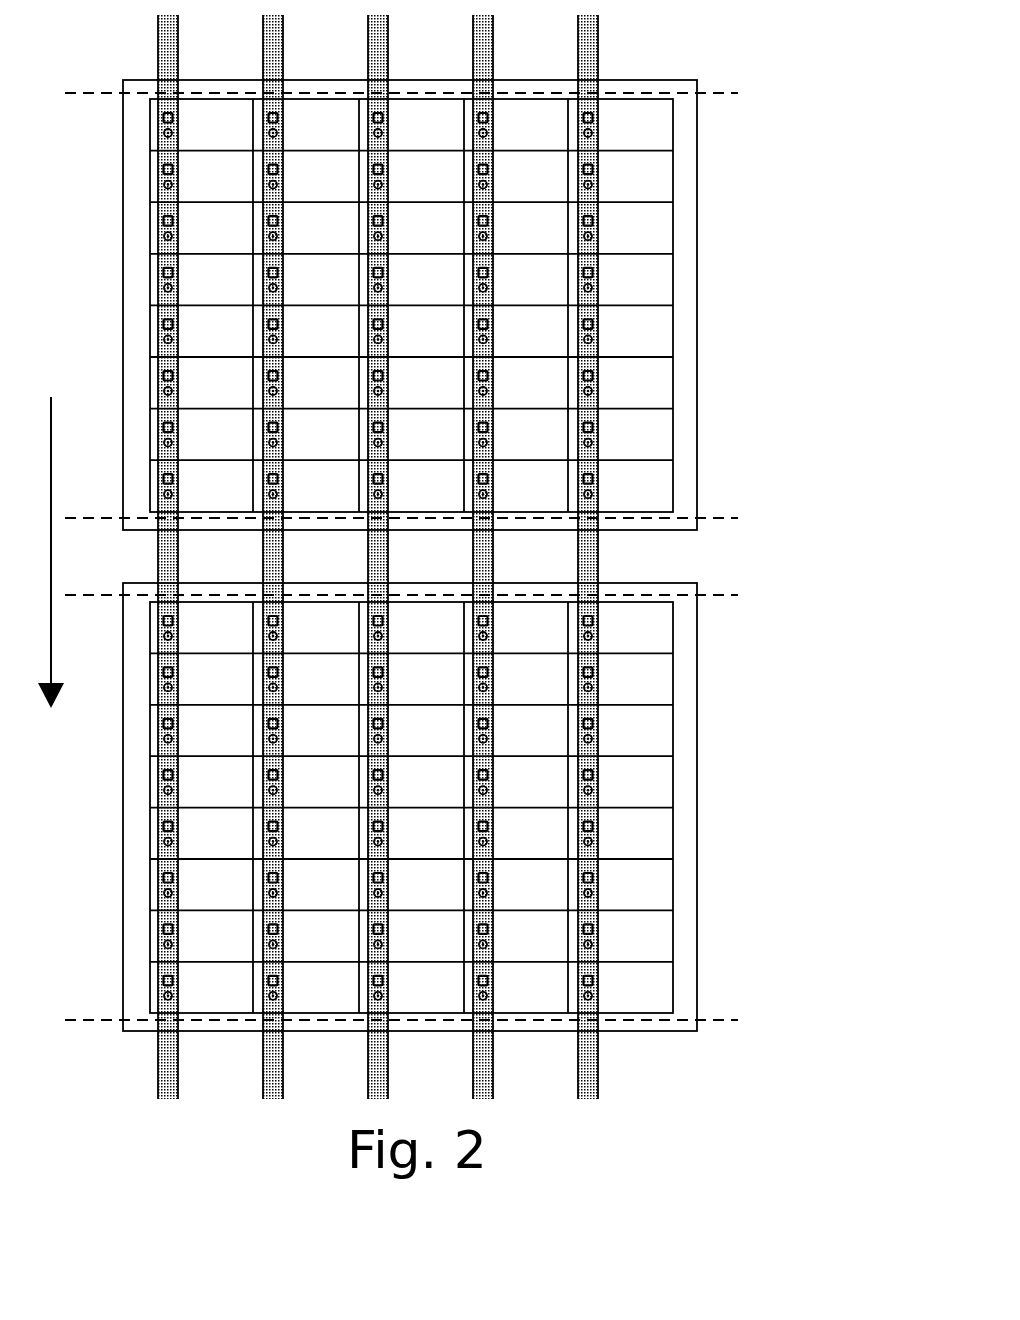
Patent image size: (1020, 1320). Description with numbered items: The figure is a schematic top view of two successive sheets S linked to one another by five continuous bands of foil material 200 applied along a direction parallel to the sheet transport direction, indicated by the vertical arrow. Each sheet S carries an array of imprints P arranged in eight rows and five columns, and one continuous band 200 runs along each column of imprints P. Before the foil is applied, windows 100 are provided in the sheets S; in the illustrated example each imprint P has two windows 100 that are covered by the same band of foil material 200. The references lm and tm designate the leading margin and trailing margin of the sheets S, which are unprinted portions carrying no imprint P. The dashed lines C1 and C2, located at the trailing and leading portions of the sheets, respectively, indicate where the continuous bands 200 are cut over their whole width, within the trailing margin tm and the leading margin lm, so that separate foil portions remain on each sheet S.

The continuous band of foil material 200 is at (265, 33).
The window 100 is at (272, 237).
The sheet S is at (130, 163).
The imprint P is at (547, 335).
The trailing margin tm is at (323, 91).
The leading margin lm is at (323, 522).
The cutting line at trailing portion C1 is at (712, 93).
The cutting line at leading portion C2 is at (712, 519).